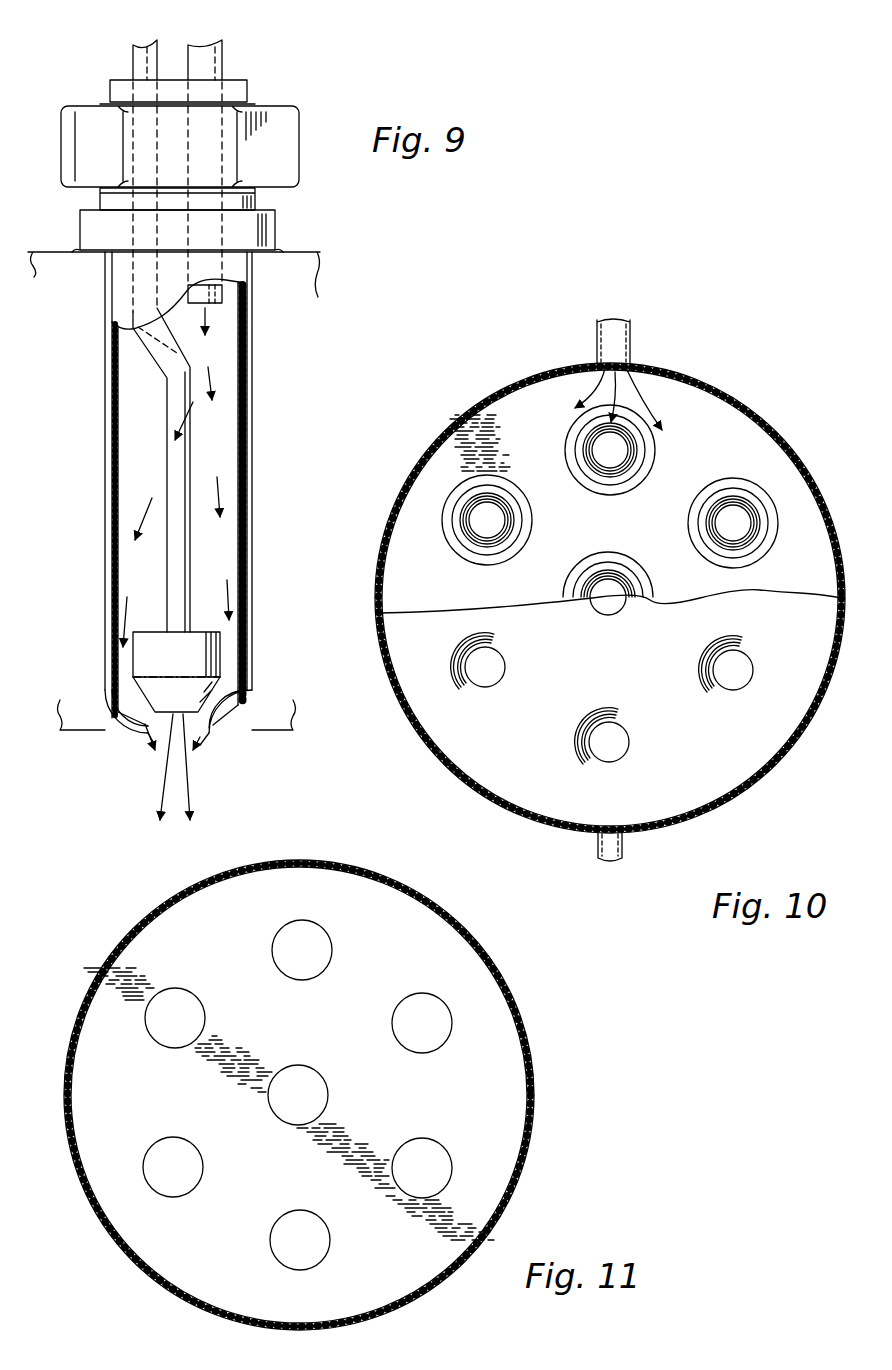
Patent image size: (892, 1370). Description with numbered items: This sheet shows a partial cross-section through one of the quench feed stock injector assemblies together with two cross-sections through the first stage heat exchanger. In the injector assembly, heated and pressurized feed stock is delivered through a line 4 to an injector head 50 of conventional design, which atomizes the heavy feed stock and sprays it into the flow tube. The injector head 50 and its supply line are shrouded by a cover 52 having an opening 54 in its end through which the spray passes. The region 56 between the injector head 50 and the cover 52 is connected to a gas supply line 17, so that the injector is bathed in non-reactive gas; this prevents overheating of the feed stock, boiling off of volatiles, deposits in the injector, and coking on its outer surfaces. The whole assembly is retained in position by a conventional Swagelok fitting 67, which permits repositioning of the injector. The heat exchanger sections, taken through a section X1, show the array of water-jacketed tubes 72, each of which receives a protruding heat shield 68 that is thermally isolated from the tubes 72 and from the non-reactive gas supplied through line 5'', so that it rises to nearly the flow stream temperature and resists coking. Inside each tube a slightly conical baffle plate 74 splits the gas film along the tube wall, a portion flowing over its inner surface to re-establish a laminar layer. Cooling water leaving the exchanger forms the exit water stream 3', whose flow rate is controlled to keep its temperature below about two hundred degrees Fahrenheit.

In FIG. 9, the feed stock lines 4 is at (133, 52).
In FIG. 9, the gas supply line 17 is at (224, 62).
In FIG. 9, the Swagelok fitting 67 is at (258, 207).
In FIG. 9, the cover 52 is at (112, 470).
In FIG. 9, the region 56 is at (230, 403).
In FIG. 9, the injector head 50 is at (210, 655).
In FIG. 9, the opening 54 is at (148, 724).
In FIG. 10, the non-reactive gas line 5'' is at (600, 359).
In FIG. 10, the distributor plate section X1 is at (725, 396).
In FIG. 11, the distributor plate section X1 is at (172, 1300).
In FIG. 10, the water-jacketed tubes 72 is at (503, 502).
In FIG. 11, the water-jacketed tubes 72 is at (330, 938).
In FIG. 10, the baffle plate 74 is at (627, 455).
In FIG. 10, the heat shield 68 is at (476, 750).
In FIG. 10, the exit water stream 3' is at (632, 853).